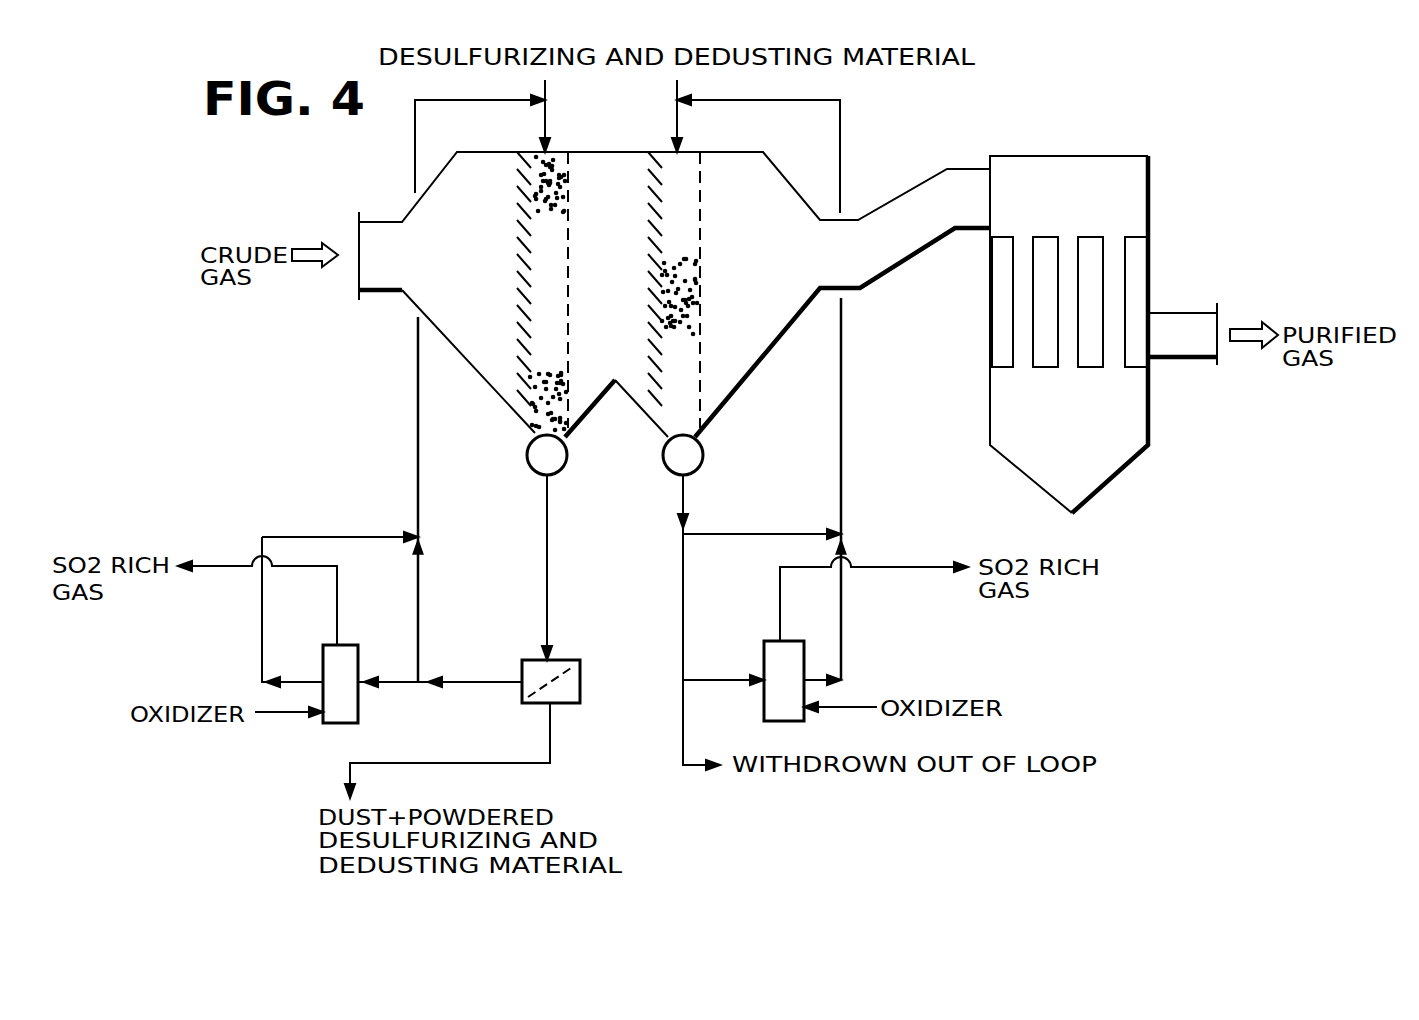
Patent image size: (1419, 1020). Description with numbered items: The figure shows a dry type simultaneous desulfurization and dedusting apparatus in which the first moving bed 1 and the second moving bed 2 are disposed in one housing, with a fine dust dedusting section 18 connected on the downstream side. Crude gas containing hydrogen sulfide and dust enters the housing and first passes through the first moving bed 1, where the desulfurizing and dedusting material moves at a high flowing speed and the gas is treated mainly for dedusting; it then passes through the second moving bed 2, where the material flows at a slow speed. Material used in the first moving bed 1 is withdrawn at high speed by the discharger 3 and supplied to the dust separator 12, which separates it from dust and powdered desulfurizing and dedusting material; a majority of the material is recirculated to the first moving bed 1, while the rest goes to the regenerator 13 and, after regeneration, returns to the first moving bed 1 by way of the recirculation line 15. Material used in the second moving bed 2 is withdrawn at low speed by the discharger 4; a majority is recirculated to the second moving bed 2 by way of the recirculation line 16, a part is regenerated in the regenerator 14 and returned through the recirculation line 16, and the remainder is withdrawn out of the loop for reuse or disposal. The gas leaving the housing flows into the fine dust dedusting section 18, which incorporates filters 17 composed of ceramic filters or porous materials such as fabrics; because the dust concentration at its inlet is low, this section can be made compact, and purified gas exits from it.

The first moving bed 1 is at (547, 330).
The second moving bed 2 is at (688, 352).
The discharger 3 is at (565, 468).
The discharger 4 is at (695, 470).
The dust separator 12 is at (535, 660).
The regenerator 13 is at (352, 645).
The regenerator 14 is at (771, 641).
The recirculation line 15 is at (418, 453).
The recirculation line 16 is at (842, 441).
The filters 17 is at (1047, 237).
The fine dust dedusting section 18 is at (1150, 185).